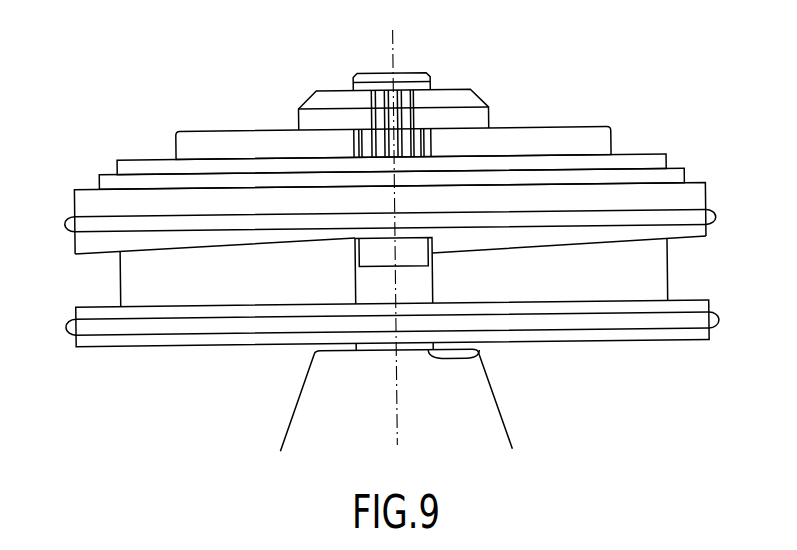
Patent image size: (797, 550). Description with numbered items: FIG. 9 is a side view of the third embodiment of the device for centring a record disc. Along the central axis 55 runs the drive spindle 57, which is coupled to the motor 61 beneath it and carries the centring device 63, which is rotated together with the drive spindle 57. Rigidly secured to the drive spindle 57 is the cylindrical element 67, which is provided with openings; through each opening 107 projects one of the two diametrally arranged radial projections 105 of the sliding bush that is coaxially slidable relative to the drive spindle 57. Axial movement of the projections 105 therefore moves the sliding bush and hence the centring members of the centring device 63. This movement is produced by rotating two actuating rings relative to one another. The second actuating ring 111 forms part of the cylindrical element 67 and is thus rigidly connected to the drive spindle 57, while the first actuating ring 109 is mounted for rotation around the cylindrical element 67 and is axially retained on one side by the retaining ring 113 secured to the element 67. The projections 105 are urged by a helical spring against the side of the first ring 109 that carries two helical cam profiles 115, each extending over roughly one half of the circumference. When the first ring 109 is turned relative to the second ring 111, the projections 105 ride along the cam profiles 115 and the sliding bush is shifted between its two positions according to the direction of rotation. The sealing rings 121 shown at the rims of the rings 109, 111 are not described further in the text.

The axis of rotation 55 is at (407, 40).
The drive spindle 57 is at (424, 85).
The motor 61 is at (467, 403).
The centring device 63 is at (515, 127).
The cylindrical element 67 is at (632, 163).
The radial projections 105 is at (418, 247).
The opening 107 is at (418, 287).
The first actuating ring 109 is at (695, 191).
The second actuating ring 111 is at (698, 308).
The retaining ring 113 is at (670, 176).
The helical cam profiles 115 is at (247, 247).
The O-ring 121 is at (705, 218).